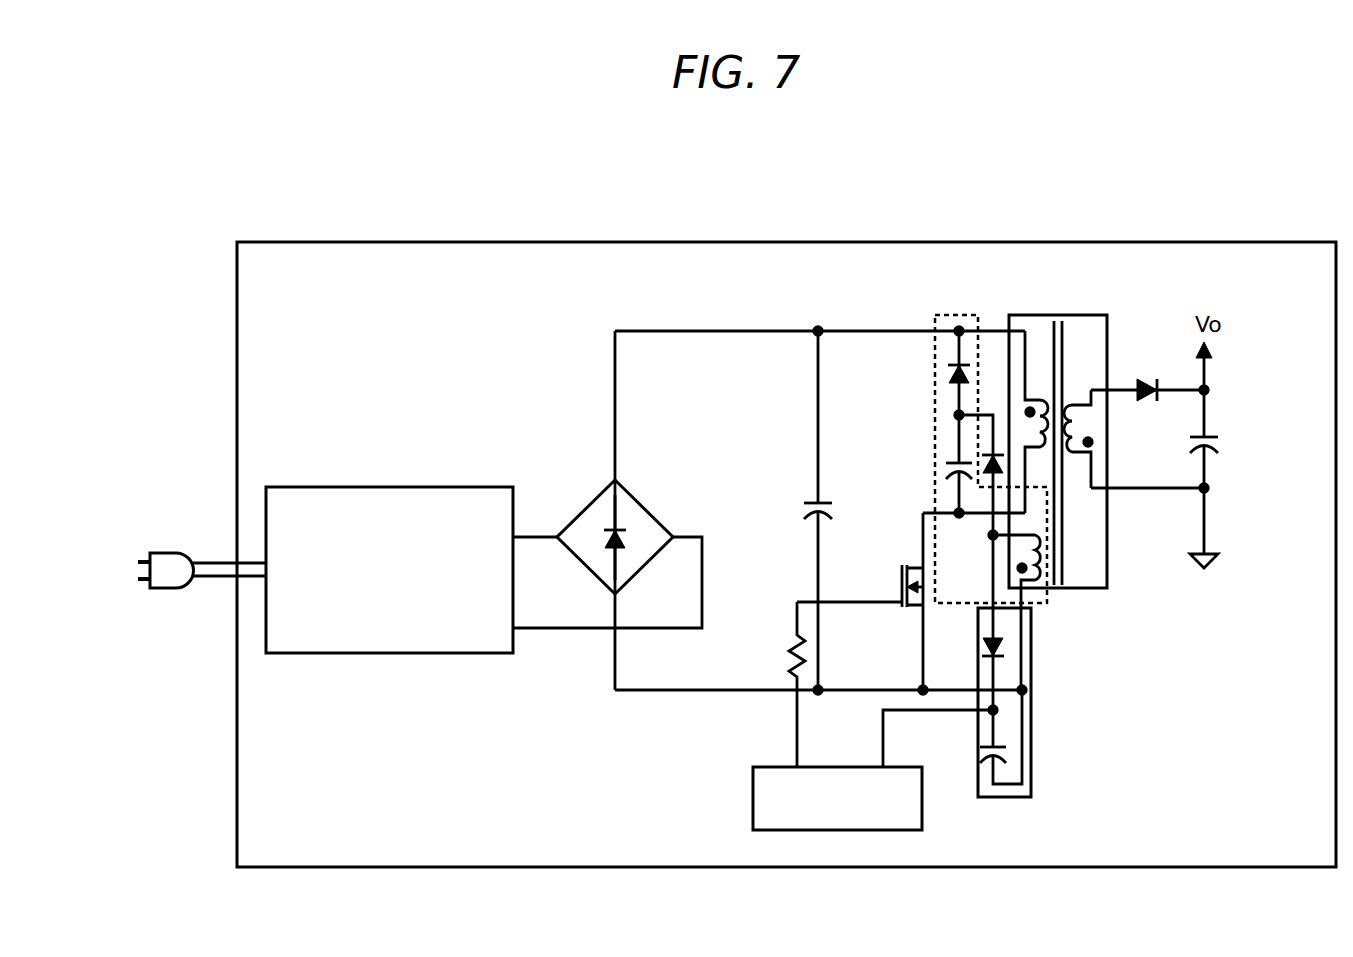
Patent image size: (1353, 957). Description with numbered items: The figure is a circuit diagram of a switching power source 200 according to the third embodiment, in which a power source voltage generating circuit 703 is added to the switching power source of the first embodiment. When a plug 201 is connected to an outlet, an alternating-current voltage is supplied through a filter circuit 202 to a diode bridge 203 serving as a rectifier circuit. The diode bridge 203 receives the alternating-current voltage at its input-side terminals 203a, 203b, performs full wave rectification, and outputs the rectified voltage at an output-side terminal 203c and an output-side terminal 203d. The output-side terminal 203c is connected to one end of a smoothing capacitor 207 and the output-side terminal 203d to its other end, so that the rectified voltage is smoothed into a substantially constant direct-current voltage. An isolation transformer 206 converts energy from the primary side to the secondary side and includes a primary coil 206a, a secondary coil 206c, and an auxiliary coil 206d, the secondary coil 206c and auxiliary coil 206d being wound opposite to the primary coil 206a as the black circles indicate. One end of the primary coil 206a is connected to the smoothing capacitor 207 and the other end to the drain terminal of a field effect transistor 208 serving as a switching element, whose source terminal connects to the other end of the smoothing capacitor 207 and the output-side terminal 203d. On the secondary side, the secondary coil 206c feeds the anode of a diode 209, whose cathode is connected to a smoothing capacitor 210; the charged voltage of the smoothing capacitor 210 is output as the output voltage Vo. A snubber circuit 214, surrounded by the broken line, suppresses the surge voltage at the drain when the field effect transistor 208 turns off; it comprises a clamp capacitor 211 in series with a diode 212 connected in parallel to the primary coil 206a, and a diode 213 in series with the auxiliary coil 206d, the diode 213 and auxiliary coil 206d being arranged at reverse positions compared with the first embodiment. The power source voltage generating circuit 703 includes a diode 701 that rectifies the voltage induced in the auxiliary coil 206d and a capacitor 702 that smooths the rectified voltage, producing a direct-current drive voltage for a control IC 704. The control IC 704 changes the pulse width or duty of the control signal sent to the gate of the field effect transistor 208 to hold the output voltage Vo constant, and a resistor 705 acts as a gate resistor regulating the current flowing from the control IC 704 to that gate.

The switching power source 200 is at (740, 242).
The plug 201 is at (165, 590).
The filter circuit 202 is at (400, 653).
The diode bridge 203 is at (645, 508).
The input-side terminal 203a is at (557, 537).
The input-side terminal 203b is at (673, 537).
The output-side terminal 203c is at (615, 480).
The output-side terminal 203d is at (615, 594).
The transformer 206 is at (1113, 481).
The primary coil 206a is at (1032, 405).
The secondary coil 206c is at (1078, 405).
The auxiliary coil 206d is at (1050, 578).
The smoothing capacitor 207 is at (812, 518).
The field effect transistor 208 is at (905, 617).
The diode 209 is at (1150, 375).
The smoothing capacitor 210 is at (1220, 445).
The clamp capacitor 211 is at (942, 470).
The diode 212 is at (951, 372).
The diode 213 is at (987, 480).
The snubber circuit 214 is at (966, 605).
The diode 701 is at (1005, 645).
The capacitor 702 is at (980, 758).
The power source voltage generating circuit 703 is at (1033, 750).
The control IC 704 is at (753, 802).
The resistor 705 is at (790, 655).